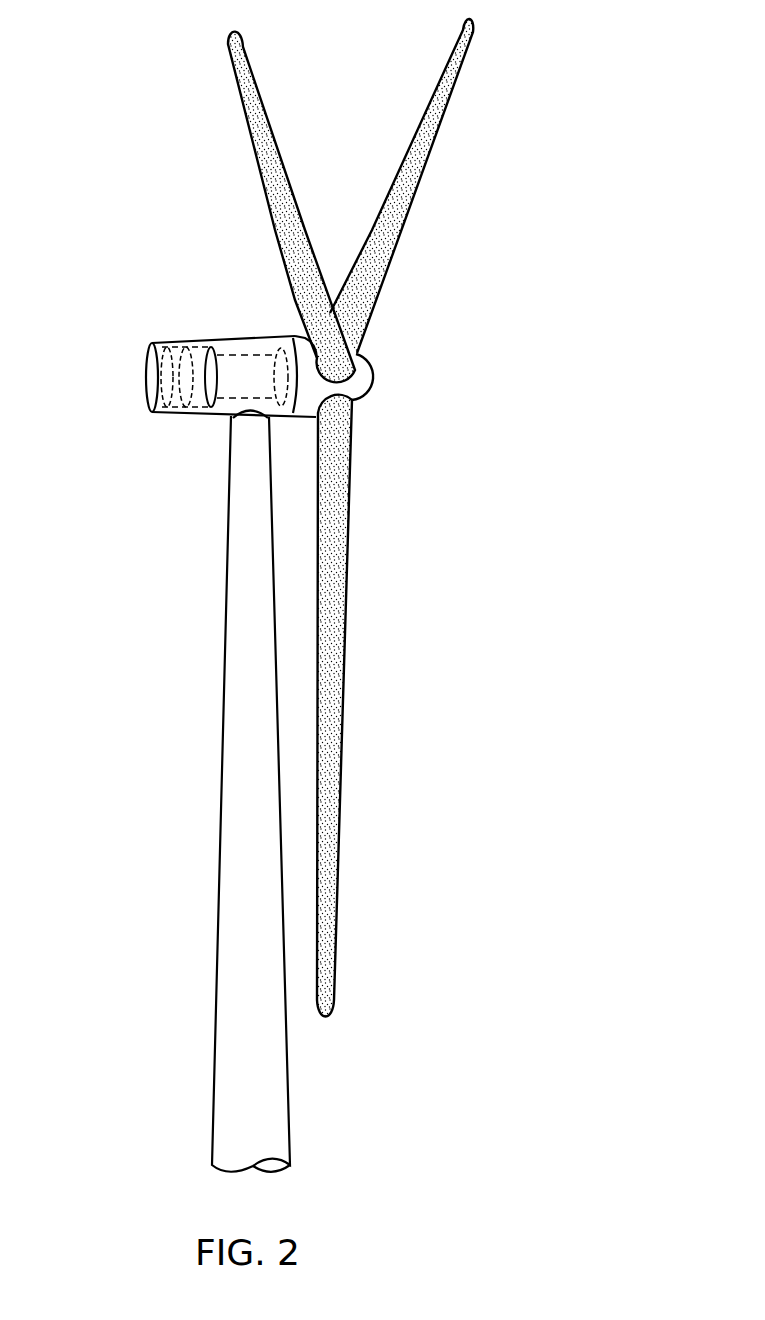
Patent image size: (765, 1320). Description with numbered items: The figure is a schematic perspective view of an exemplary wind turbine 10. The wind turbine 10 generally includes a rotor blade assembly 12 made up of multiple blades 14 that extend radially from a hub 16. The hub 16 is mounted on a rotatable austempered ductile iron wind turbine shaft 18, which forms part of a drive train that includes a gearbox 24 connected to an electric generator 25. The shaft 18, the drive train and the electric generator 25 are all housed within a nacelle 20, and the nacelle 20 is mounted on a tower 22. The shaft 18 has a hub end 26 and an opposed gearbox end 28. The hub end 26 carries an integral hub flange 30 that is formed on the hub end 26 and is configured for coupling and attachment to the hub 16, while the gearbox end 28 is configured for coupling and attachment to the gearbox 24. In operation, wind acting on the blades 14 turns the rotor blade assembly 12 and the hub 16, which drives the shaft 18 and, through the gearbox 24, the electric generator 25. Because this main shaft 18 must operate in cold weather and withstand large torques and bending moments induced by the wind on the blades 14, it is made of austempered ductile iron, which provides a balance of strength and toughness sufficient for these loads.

The wind turbine 10 is at (462, 530).
The rotor blade assembly 12 is at (468, 354).
The blades 14 is at (262, 108).
The hub 16 is at (367, 390).
The austempered ductile iron wind turbine shaft 18 is at (215, 342).
The nacelle 20 is at (210, 419).
The tower 22 is at (238, 705).
The gearbox 24 is at (187, 346).
The electric generator 25 is at (167, 340).
The hub end 26 is at (252, 348).
The gearbox end 28 is at (222, 402).
The integral hub flange 30 is at (284, 345).